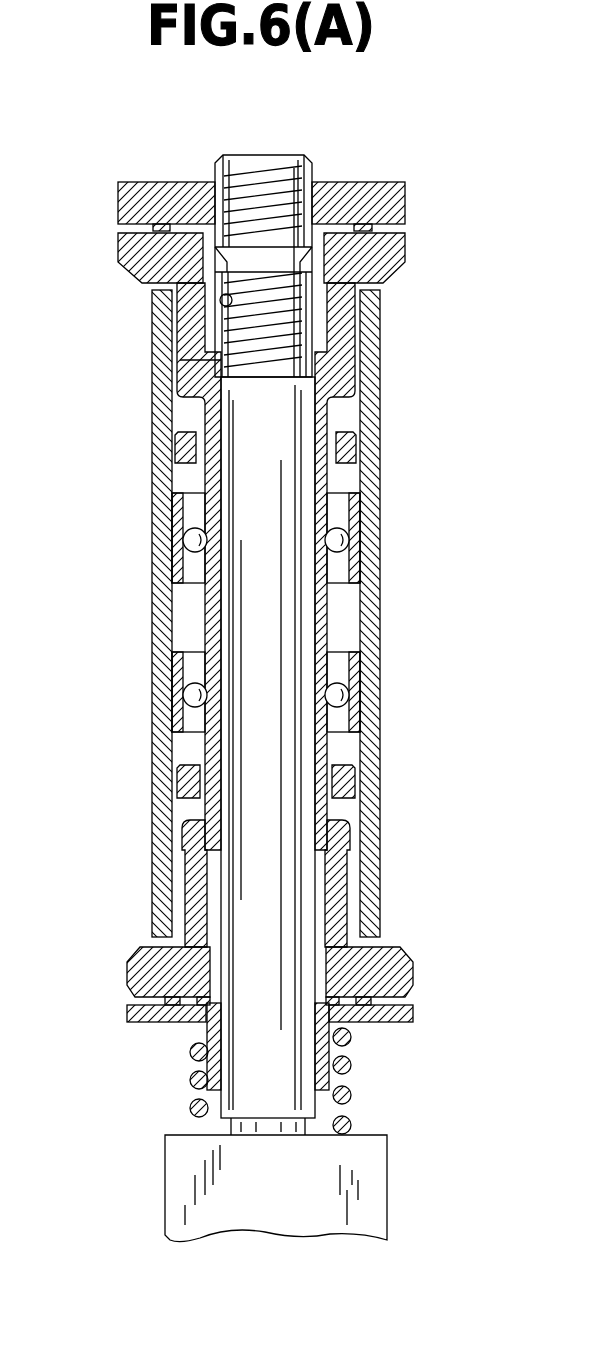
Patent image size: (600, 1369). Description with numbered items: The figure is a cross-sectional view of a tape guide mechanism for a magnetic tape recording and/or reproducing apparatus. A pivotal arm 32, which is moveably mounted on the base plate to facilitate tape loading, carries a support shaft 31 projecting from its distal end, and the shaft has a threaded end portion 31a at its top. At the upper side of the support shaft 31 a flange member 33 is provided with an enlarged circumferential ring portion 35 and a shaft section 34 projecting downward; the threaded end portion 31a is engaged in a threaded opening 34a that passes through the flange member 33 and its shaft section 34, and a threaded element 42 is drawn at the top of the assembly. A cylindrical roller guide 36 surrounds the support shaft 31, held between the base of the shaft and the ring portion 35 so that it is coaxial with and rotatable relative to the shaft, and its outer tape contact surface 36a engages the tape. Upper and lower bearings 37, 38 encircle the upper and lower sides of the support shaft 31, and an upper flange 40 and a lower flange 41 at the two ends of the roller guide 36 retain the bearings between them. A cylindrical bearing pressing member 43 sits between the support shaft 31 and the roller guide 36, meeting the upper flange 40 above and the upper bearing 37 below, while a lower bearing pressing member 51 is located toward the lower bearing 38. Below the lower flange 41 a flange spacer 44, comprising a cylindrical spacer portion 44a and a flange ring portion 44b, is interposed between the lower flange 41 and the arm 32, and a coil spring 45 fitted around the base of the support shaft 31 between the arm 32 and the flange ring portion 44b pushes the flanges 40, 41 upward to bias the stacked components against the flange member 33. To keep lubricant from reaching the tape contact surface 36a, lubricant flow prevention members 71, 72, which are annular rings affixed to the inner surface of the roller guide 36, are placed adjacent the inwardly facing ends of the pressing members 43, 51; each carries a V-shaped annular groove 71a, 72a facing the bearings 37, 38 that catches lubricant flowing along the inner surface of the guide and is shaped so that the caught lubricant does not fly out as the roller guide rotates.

The support shaft 31 is at (294, 892).
The threaded end portion 31a is at (230, 360).
The pivotal arm 32 is at (184, 1190).
The flange member 33 is at (271, 201).
The shaft section 34 is at (316, 263).
The threaded opening 34a is at (228, 306).
The ring portion 35 is at (346, 188).
The cylindrical roller guide 36 is at (342, 608).
The tape contact surface 36a is at (161, 530).
The upper bearing 37 is at (356, 520).
The lower bearing 38 is at (343, 690).
The upper flange 40 is at (136, 250).
The lower flange 41 is at (148, 956).
The threaded bolt 42 is at (272, 173).
The bearing pressing member 43 is at (343, 330).
The flange spacer 44 is at (276, 1068).
The cylindrical spacer portion 44a is at (194, 1078).
The flange ring portion 44b is at (404, 1024).
The coil spring 45 is at (351, 1092).
The lower bearing pressing member 51 is at (190, 848).
The upper lubricant flow prevention member 71 is at (364, 432).
The annular groove 71a is at (185, 447).
The lower lubricant flow prevention member 72 is at (356, 792).
The annular groove 72a is at (176, 772).